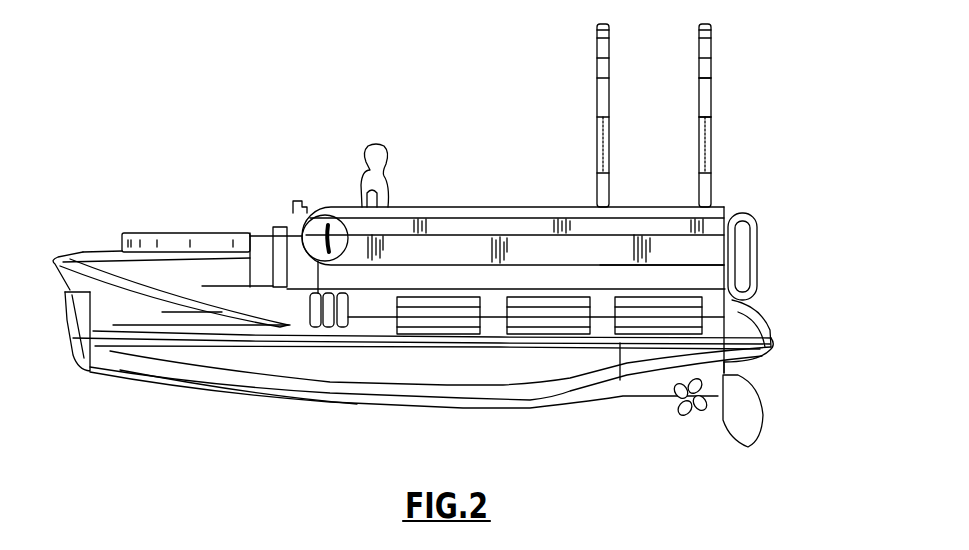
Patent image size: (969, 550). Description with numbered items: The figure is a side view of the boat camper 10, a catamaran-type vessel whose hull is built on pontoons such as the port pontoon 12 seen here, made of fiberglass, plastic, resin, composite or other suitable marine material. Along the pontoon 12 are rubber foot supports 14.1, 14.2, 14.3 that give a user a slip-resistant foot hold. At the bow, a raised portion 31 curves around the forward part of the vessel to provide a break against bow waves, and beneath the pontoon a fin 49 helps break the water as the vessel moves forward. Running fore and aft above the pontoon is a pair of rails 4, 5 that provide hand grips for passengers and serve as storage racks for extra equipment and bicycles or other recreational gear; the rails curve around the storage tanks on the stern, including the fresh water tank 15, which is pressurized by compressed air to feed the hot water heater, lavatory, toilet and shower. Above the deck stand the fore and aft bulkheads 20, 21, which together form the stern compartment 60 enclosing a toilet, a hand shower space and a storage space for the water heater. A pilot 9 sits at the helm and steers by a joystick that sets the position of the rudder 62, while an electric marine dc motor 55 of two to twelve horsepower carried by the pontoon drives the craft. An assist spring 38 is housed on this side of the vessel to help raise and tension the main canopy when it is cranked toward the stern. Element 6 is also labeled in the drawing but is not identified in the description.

The rail 4 is at (402, 232).
The rail 5 is at (445, 263).
The boom section 6 is at (663, 248).
The pilot 9 is at (352, 162).
The boat camper 10 is at (793, 440).
The port pontoon 12 is at (413, 389).
The rubber foot support 14.1 is at (737, 317).
The rubber foot support 14.2 is at (537, 322).
The rubber foot support 14.3 is at (440, 322).
The fresh water tank 15 is at (762, 252).
The fore bulkhead 20 is at (597, 131).
The aft bulkhead 21 is at (712, 130).
The raised portion 31 is at (110, 260).
The assist spring 38 is at (317, 238).
The fin 49 is at (201, 389).
The electric marine dc motor 55 is at (687, 413).
The stern compartment 60 is at (672, 130).
The port rudder 62 is at (750, 408).